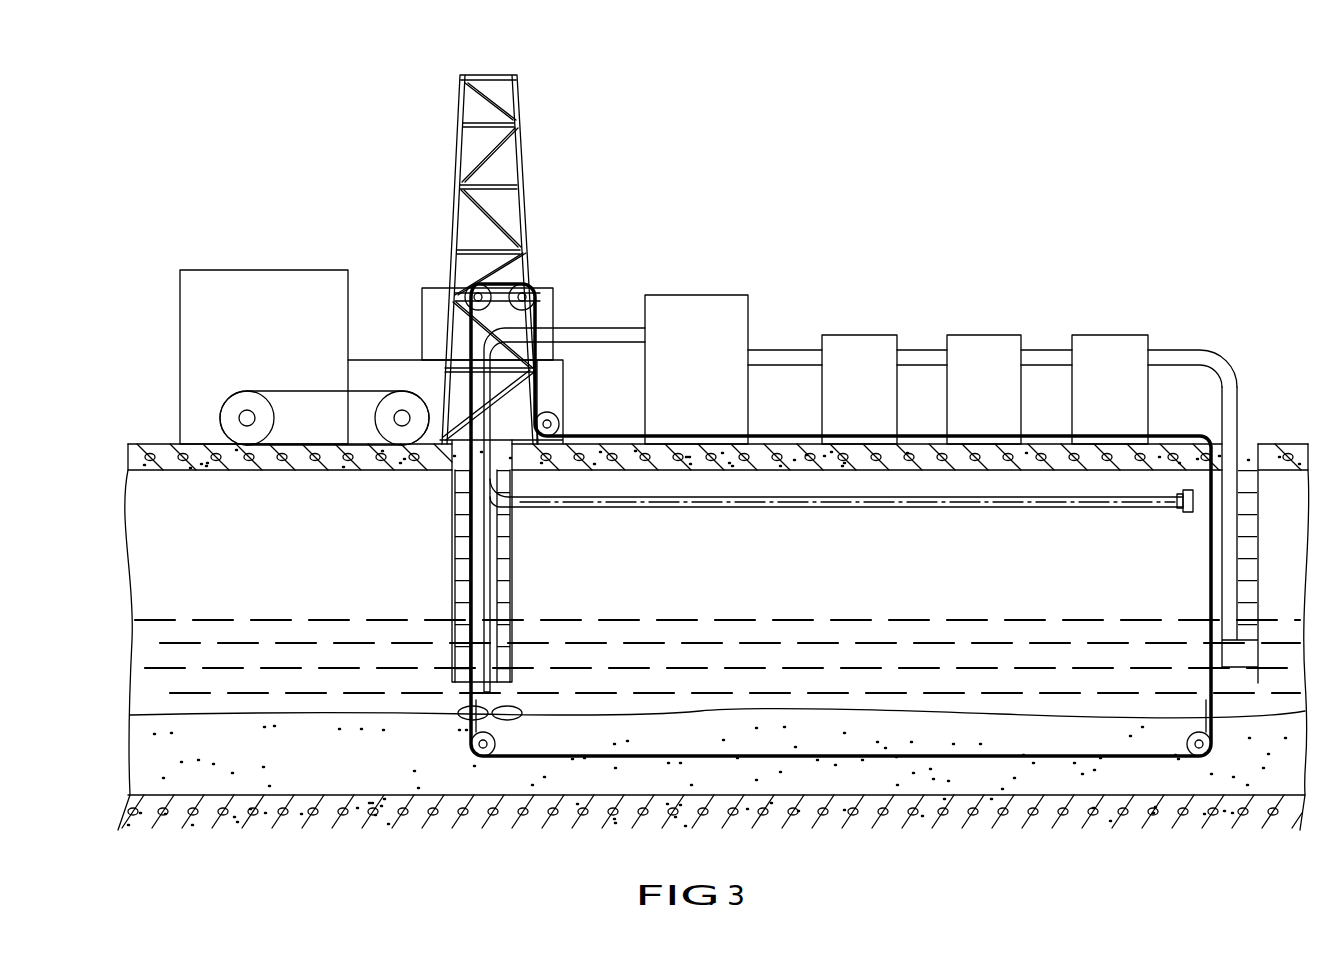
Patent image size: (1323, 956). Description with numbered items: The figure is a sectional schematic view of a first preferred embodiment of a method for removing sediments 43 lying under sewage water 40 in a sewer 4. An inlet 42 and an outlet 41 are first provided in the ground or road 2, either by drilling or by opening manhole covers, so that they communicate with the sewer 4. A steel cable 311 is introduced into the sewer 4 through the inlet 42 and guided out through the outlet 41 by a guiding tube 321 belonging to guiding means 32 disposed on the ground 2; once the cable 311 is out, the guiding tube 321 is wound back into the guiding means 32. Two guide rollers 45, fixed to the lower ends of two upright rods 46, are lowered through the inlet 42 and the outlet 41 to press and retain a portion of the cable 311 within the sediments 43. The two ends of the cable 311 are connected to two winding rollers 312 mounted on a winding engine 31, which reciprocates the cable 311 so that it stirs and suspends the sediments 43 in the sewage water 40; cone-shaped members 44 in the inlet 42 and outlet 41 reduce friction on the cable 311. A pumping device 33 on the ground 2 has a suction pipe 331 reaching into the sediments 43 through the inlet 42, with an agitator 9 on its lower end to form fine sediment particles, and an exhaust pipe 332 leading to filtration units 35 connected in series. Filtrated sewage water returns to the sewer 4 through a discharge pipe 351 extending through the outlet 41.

The ground or road 2 is at (154, 444).
The sewer 4 is at (1280, 478).
The agitator 9 is at (515, 710).
The winding engine 31 is at (525, 170).
The guiding means 32 is at (382, 360).
The pumping device 33 is at (700, 296).
The filtration units 35 is at (878, 337).
The sewage water 40 is at (1283, 687).
The outlet 41 is at (1242, 433).
The inlet 42 is at (457, 477).
The sediments 43 is at (845, 795).
The cone-shaped members 44 is at (448, 472).
The guide rollers 45 is at (500, 745).
The upright rods 46 is at (468, 710).
The steel cable 311 is at (545, 322).
The winding rollers 312 is at (470, 292).
The guiding tube 321 is at (740, 508).
The suction pipe 331 is at (607, 347).
The exhaust pipe 332 is at (784, 350).
The discharge pipe 351 is at (1174, 350).